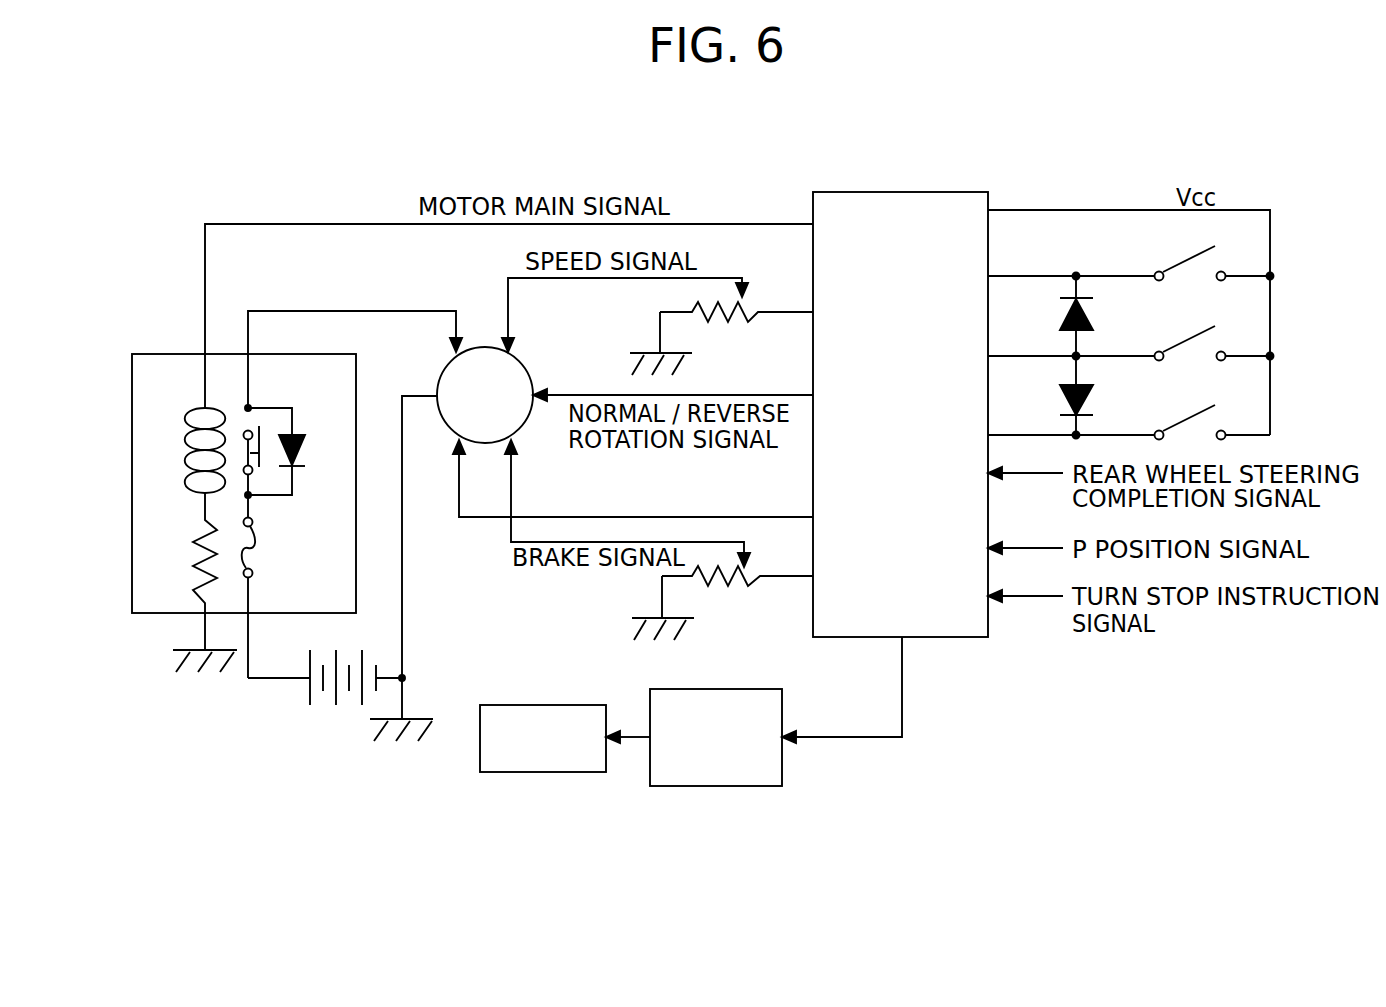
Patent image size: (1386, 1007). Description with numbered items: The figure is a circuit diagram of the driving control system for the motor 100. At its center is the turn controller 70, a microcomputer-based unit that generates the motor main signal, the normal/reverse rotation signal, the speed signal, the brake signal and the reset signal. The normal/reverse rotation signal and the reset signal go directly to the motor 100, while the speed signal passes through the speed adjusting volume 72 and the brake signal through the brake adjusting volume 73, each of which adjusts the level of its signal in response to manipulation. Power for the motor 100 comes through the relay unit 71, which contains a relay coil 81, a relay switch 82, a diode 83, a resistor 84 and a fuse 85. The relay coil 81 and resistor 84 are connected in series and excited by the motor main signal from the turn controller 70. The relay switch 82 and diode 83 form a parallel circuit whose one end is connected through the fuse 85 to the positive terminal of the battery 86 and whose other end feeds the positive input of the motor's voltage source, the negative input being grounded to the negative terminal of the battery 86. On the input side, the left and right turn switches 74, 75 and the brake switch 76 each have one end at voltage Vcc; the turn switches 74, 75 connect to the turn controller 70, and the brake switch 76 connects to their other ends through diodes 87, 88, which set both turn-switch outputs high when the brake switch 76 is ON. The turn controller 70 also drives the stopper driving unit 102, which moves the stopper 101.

The turn controller 70 is at (935, 192).
The relay unit 71 is at (172, 354).
The speed adjusting volume 72 is at (742, 320).
The brake adjusting volume 73 is at (742, 586).
The left turn switch 74 is at (1166, 270).
The right turn switch 75 is at (1188, 426).
The brake switch 76 is at (1188, 346).
The relay coil 81 is at (193, 451).
The relay switch 82 is at (262, 466).
The diode 83 is at (300, 430).
The resistor 84 is at (193, 572).
The fuse 85 is at (262, 566).
The battery 86 is at (335, 696).
The diode 87 is at (1060, 318).
The diode 88 is at (1060, 395).
The motor 100 is at (437, 378).
The stopper 101 is at (548, 774).
The stopper driving unit 102 is at (728, 788).